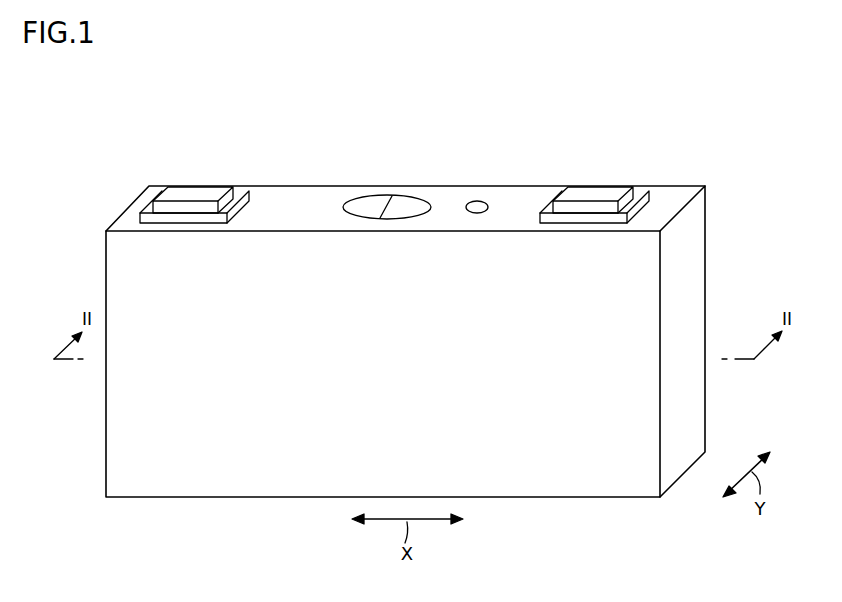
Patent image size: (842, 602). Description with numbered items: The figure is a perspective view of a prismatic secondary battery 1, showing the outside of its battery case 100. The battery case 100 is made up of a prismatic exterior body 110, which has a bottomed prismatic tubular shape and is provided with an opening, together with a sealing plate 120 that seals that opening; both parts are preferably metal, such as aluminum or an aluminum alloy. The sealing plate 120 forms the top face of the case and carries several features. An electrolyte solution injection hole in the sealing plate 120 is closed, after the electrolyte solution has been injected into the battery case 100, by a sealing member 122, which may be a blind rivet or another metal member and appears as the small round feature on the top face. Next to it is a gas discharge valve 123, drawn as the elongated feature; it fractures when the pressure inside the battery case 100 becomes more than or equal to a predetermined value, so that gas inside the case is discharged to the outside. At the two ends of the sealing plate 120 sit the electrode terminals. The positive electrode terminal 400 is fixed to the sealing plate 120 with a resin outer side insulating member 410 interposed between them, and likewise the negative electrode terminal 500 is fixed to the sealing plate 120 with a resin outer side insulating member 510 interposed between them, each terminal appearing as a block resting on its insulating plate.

The prismatic secondary battery 1 is at (430, 273).
The battery case 100 is at (432, 301).
The prismatic exterior body 110 is at (695, 232).
The sealing plate 120 is at (405, 186).
The sealing member 122 is at (478, 202).
The gas discharge valve 123 is at (400, 204).
The positive electrode terminal 400 is at (613, 194).
The outer side insulating member 410 is at (544, 200).
The negative electrode terminal 500 is at (213, 194).
The outer side insulating member 510 is at (144, 200).